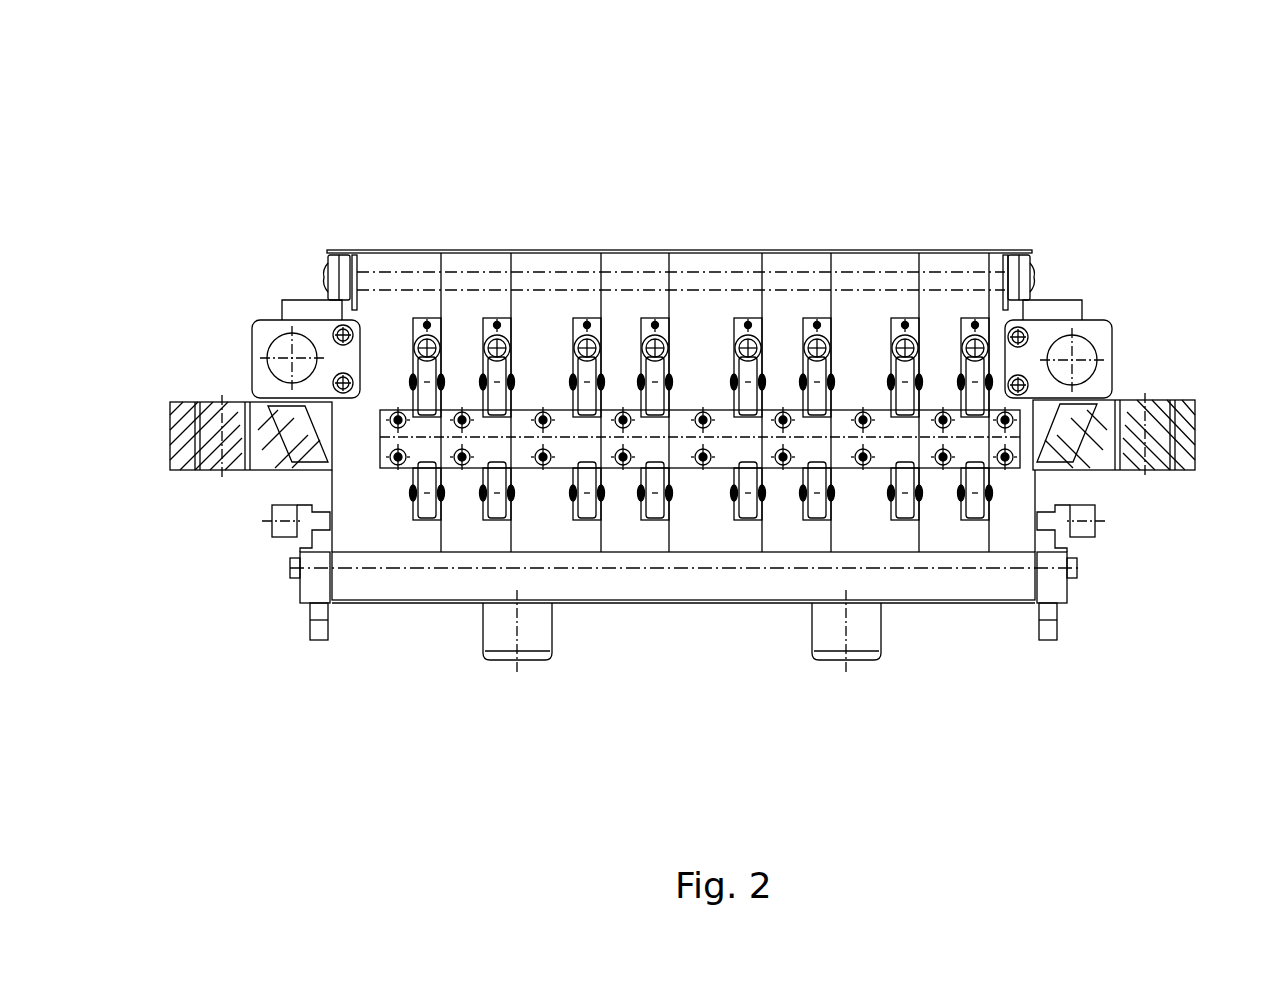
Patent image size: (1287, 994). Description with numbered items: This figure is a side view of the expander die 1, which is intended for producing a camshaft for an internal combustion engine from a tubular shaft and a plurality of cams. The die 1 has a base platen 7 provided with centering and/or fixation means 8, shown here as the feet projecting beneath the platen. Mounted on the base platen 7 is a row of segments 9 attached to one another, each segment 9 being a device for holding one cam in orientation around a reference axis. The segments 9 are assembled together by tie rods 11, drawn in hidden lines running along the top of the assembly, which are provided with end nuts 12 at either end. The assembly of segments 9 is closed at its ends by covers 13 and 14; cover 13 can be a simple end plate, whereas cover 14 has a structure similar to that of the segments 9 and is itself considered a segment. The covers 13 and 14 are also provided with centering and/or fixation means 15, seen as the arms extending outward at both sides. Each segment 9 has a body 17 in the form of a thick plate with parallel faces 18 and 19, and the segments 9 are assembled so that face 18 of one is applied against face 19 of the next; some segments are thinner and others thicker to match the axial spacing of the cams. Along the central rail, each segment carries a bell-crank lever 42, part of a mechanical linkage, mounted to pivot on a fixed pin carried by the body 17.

The expander die 1 is at (1088, 172).
The base platen 7 is at (715, 580).
The centering and/or fixation means 8 is at (507, 635).
The segments 9 is at (542, 312).
The tie rods 11 is at (732, 280).
The end nuts 12 is at (337, 262).
The cover 13 is at (1013, 500).
The cover 14 is at (390, 312).
The centering and/or fixation means 15 is at (275, 452).
The body 17 is at (868, 310).
The face 18 is at (437, 310).
The face 19 is at (672, 307).
The bell-crank lever 42 is at (437, 428).